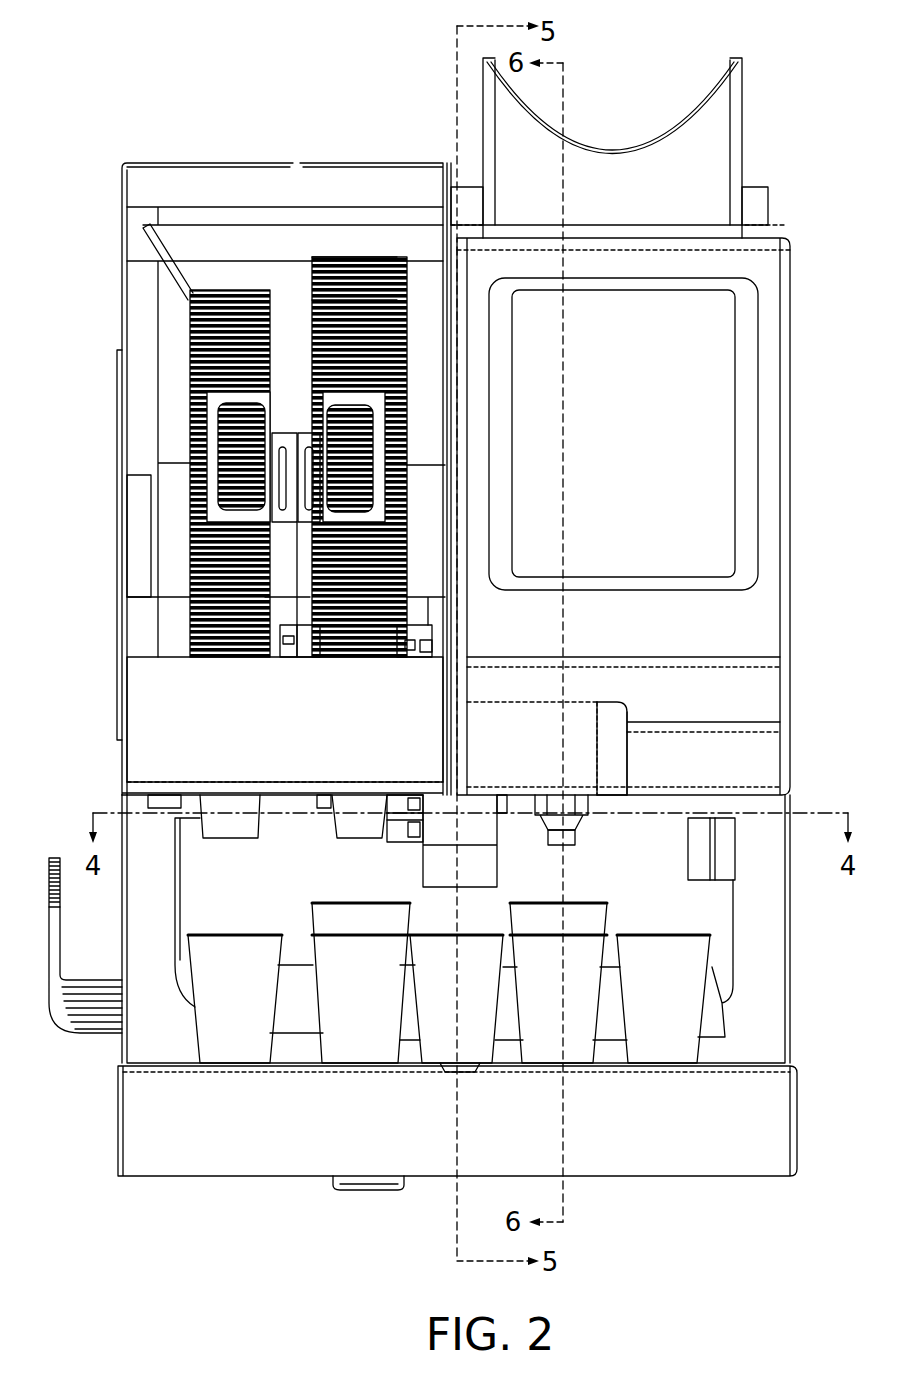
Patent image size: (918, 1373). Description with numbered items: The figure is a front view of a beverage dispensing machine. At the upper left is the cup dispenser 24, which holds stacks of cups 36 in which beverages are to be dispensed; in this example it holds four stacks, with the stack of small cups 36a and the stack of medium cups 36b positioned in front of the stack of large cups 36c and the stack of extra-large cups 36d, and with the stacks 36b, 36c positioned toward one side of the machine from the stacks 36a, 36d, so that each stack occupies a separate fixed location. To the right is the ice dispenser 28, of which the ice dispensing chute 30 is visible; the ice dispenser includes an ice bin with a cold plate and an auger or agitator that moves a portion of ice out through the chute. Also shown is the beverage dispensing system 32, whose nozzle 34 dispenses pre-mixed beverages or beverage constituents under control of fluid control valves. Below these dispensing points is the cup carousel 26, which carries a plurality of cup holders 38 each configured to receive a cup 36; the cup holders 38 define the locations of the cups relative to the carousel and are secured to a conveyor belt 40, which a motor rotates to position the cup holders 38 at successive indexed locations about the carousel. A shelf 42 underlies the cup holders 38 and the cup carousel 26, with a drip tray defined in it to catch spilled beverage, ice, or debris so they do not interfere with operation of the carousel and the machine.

The cup dispenser 24 is at (103, 452).
The cup carousel 26 is at (737, 943).
The ice dispenser 28 is at (431, 789).
The ice dispensing chute 30 is at (490, 836).
The beverage dispensing system 32 is at (612, 789).
The nozzle 34 is at (572, 822).
The cups 36 is at (553, 910).
The stack of small cups 36a is at (375, 284).
The stack of medium cups 36b is at (181, 375).
The stack of large cups 36c is at (176, 281).
The stack of extra-large cups 36d is at (310, 255).
The cup holders 38 is at (632, 1052).
The conveyor belt 40 is at (608, 967).
The shelf 42 is at (753, 1062).